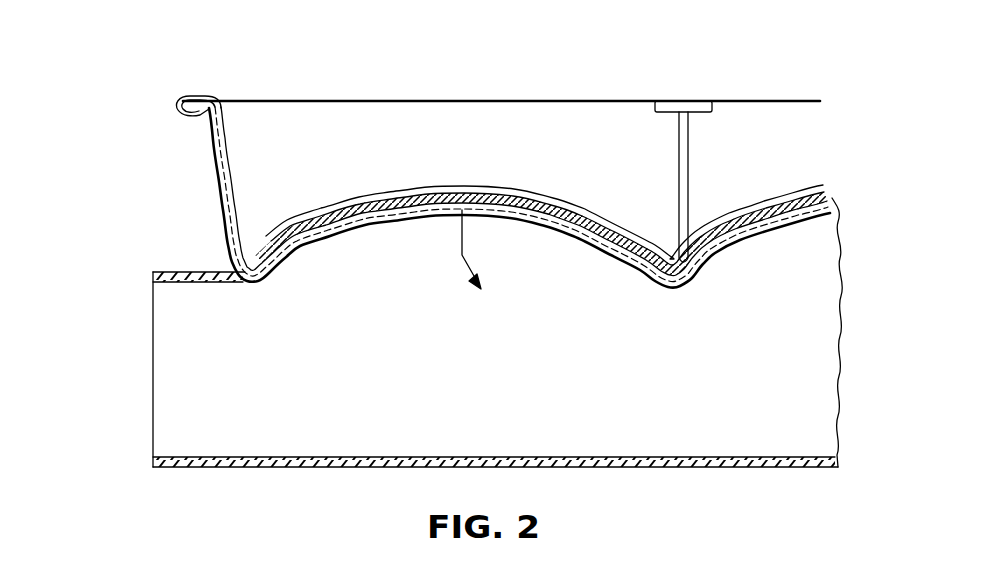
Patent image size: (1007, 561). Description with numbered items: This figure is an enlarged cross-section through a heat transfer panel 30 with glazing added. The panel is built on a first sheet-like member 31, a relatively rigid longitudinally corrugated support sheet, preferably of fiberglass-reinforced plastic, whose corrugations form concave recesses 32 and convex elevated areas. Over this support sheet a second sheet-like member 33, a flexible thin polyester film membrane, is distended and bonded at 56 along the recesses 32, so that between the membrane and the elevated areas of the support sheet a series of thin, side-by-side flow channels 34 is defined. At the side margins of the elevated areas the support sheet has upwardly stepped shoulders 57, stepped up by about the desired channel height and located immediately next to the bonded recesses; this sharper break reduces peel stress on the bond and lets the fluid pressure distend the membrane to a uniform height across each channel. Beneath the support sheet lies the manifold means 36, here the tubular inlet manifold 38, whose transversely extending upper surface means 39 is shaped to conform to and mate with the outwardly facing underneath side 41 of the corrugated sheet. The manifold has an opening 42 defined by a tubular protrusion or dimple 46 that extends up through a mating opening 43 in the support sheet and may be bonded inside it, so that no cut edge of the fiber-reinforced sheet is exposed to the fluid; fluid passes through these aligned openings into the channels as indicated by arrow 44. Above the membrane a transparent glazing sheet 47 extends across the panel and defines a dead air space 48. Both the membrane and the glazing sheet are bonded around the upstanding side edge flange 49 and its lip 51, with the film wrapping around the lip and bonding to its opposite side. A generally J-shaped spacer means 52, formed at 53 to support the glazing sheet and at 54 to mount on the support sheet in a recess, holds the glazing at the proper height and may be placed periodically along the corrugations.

The panel 30 is at (182, 176).
The first sheet-like member 31 is at (218, 224).
The recesses 32 is at (248, 280).
The second sheet-like member 33 is at (478, 165).
The flow channels 34 is at (590, 220).
The manifold means 36 is at (497, 368).
The tubular inlet manifold 38 is at (722, 472).
The transversely extending surface means 39 is at (333, 220).
The outwardly facing side 41 is at (374, 223).
The openings 42 is at (473, 202).
The mating opening 43 is at (487, 191).
The arrow 44 is at (462, 256).
The tubular protrusion 46 is at (455, 207).
The glazing sheet 47 is at (193, 113).
The dead air space 48 is at (684, 152).
The side edge flange 49 is at (212, 144).
The lip 51 is at (203, 100).
The spacer means 52 is at (678, 168).
The glazing support portion 53 is at (713, 112).
The mounting portion 54 is at (647, 286).
The bonding 56 is at (238, 268).
The upwardly stepped shoulders 57 is at (291, 246).